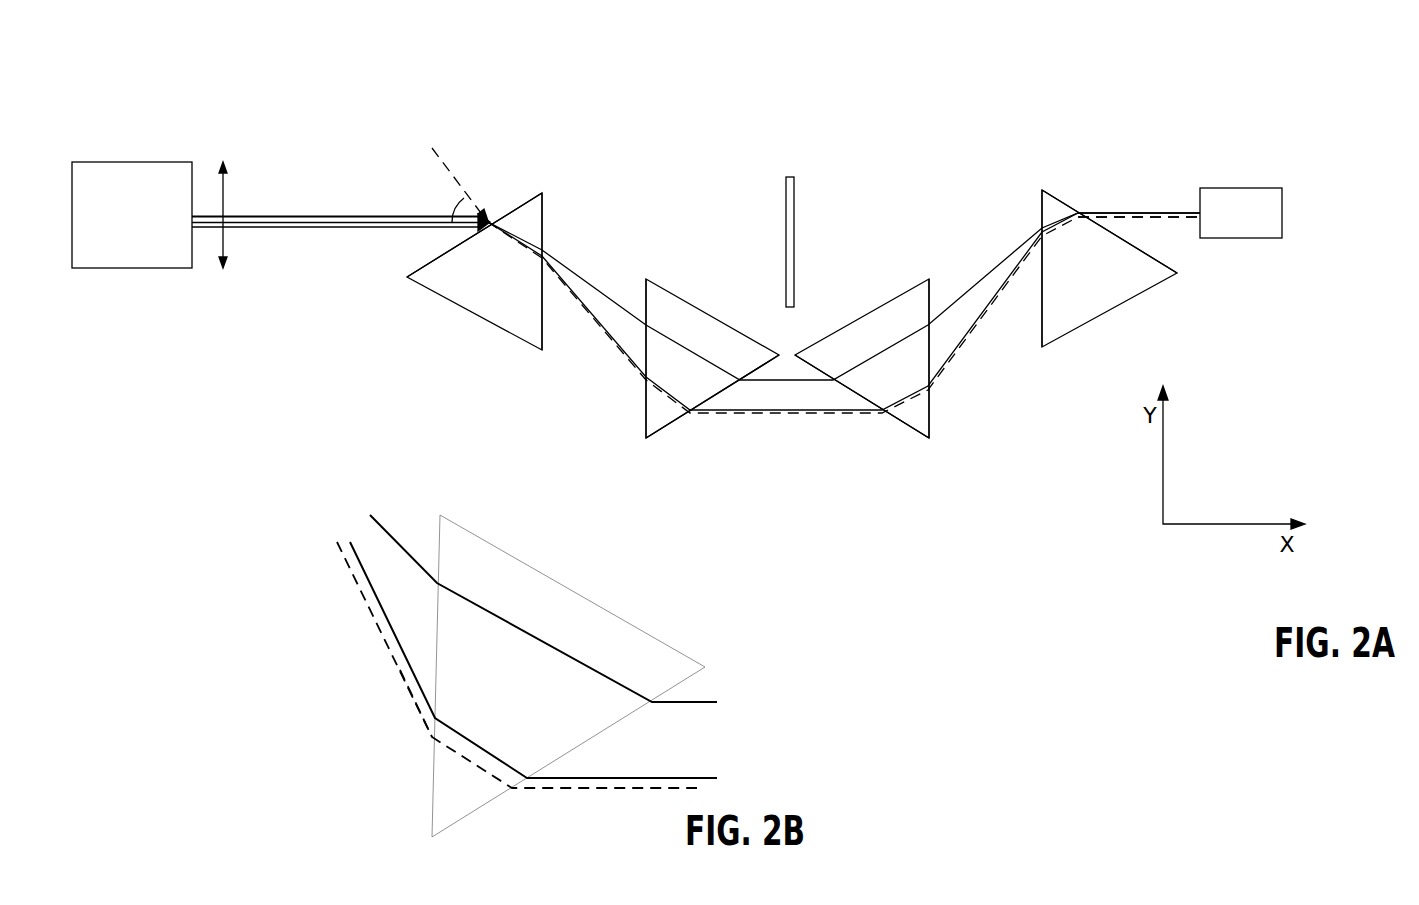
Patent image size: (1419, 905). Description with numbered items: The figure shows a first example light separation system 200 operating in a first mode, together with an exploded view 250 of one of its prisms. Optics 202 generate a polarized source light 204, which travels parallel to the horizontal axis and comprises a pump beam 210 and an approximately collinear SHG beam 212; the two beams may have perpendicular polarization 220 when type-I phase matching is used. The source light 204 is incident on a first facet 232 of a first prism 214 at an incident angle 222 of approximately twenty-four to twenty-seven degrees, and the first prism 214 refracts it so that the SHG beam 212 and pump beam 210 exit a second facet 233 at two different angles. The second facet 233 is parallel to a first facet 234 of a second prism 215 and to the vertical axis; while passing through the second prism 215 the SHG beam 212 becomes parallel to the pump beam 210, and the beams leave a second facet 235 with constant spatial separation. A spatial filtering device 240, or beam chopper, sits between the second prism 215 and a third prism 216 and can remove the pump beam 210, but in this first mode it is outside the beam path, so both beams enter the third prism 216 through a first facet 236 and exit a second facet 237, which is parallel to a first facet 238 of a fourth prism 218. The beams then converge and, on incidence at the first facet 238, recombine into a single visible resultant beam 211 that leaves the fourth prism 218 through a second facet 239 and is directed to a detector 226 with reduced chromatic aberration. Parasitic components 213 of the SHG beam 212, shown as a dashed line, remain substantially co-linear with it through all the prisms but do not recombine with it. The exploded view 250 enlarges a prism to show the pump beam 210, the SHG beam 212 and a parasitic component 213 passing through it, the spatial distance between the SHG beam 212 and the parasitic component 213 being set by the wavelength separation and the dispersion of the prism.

In FIG. 2A, the light separation system 200 is at (1303, 47).
In FIG. 2A, the optics 202 is at (132, 215).
In FIG. 2A, the source light 204 is at (372, 227).
In FIG. 2A, the pump beam 210 is at (298, 217).
In FIG. 2B, the pump beam 210 is at (510, 623).
In FIG. 2A, the resultant beam 211 is at (1157, 212).
In FIG. 2A, the SHG beam 212 is at (303, 227).
In FIG. 2B, the SHG beam 212 is at (468, 740).
In FIG. 2B, the parasitic components 213 is at (416, 700).
In FIG. 2A, the first prism 214 is at (523, 327).
In FIG. 2A, the second prism 215 is at (683, 322).
In FIG. 2A, the third prism 216 is at (862, 327).
In FIG. 2B, the third prism 216 is at (608, 610).
In FIG. 2A, the fourth prism 218 is at (1105, 313).
In FIG. 2A, the perpendicular polarization 220 is at (223, 185).
In FIG. 2A, the incident angle 222 is at (460, 200).
In FIG. 2A, the detector 226 is at (1241, 213).
In FIG. 2A, the first facet of first prism 232 is at (525, 203).
In FIG. 2A, the second facet of first prism 233 is at (543, 218).
In FIG. 2A, the first facet of second prism 234 is at (645, 410).
In FIG. 2A, the second facet of second prism 235 is at (675, 420).
In FIG. 2A, the first facet of third prism 236 is at (907, 427).
In FIG. 2A, the second facet of third prism 237 is at (933, 409).
In FIG. 2A, the first facet of fourth prism 238 is at (1041, 215).
In FIG. 2A, the second facet of fourth prism 239 is at (1063, 205).
In FIG. 2A, the spatial filtering device 240 is at (795, 207).
In FIG. 2B, the exploded view 250 is at (735, 534).